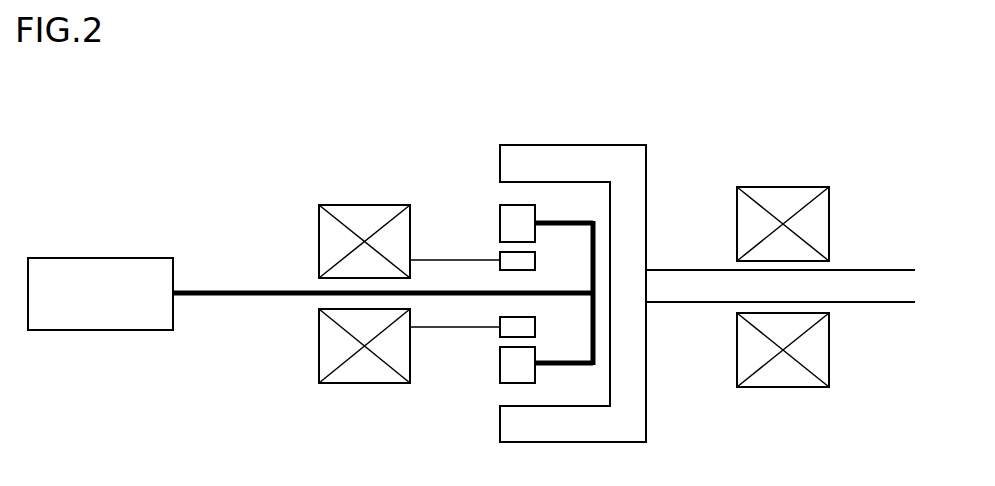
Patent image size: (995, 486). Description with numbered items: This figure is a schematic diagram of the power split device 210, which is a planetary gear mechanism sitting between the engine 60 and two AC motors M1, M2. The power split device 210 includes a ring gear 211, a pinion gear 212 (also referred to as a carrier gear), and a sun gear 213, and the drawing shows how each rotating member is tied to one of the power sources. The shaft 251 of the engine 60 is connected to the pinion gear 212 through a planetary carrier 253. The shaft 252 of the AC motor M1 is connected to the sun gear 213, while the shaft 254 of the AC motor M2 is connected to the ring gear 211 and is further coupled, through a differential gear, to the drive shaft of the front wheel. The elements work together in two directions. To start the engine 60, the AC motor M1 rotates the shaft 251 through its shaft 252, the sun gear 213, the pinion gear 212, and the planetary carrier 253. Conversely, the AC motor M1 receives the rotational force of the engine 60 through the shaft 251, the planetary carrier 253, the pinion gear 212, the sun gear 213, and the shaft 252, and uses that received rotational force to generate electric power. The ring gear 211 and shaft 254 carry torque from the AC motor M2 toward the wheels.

The engine 60 is at (101, 258).
The shaft of engine 251 is at (242, 306).
The shaft of AC motor M1 252 is at (424, 258).
The pinion gear 212 is at (500, 215).
The sun gear 213 is at (500, 258).
The planetary carrier 253 is at (565, 228).
The ring gear 211 is at (618, 145).
The power split device 210 is at (547, 126).
The shaft of AC motor M2 254 is at (889, 283).
The AC motor M1 is at (364, 205).
The AC motor M2 is at (786, 187).